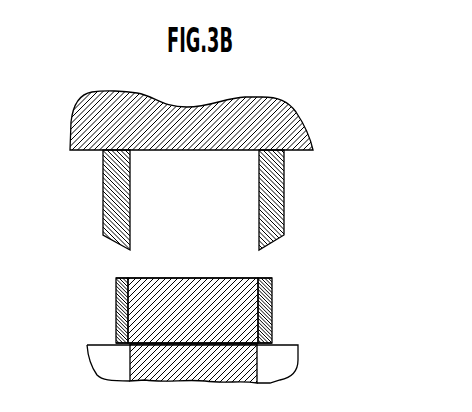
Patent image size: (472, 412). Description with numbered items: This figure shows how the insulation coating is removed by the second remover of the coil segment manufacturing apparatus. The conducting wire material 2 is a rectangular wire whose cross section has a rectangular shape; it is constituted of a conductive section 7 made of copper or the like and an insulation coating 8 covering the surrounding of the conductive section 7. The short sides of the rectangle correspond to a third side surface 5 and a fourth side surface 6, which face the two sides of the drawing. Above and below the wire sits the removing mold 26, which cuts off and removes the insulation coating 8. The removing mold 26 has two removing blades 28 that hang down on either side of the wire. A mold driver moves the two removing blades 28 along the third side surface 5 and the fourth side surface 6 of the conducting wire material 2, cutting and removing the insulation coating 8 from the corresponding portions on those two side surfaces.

The conducting wire material 2 is at (210, 319).
The third side surface 5 is at (117, 314).
The fourth side surface 6 is at (273, 322).
The conductive section 7 is at (117, 277).
The insulation coating 8 is at (116, 331).
The removing mold 26 is at (345, 128).
The removing blades 28 is at (103, 190).